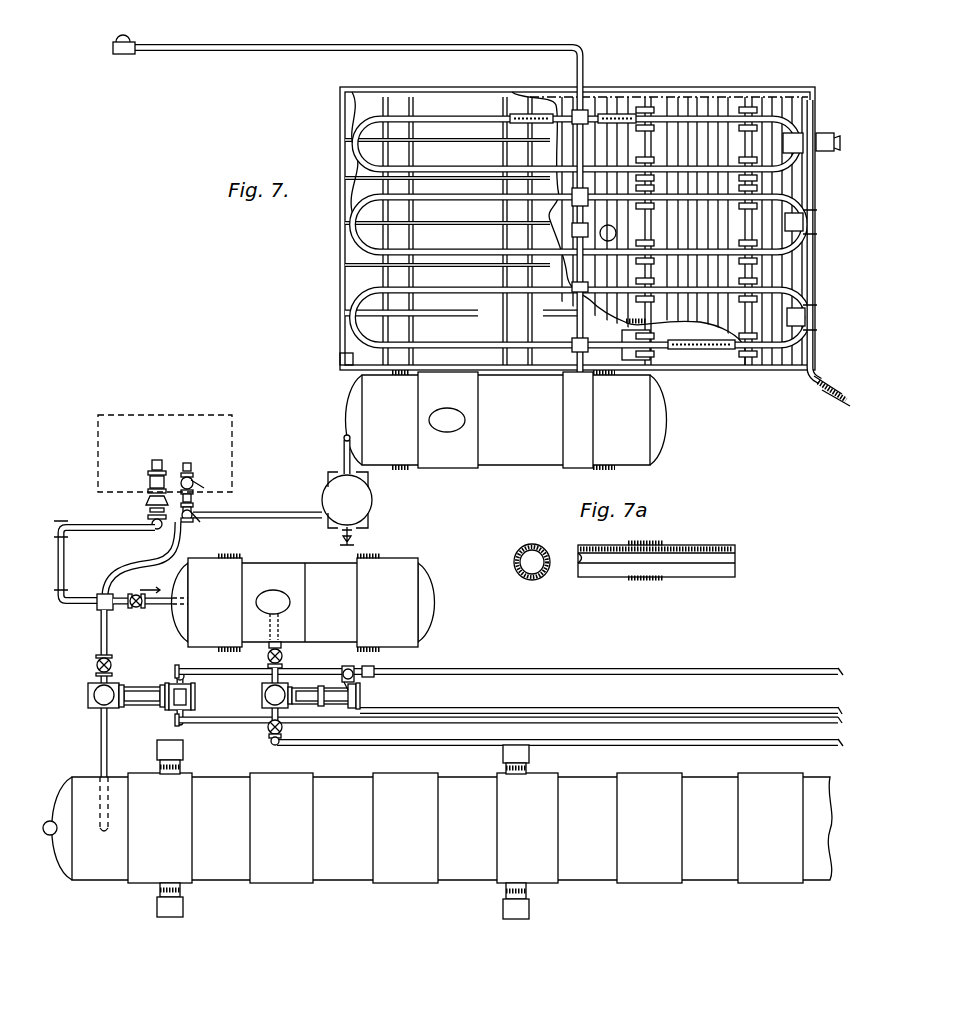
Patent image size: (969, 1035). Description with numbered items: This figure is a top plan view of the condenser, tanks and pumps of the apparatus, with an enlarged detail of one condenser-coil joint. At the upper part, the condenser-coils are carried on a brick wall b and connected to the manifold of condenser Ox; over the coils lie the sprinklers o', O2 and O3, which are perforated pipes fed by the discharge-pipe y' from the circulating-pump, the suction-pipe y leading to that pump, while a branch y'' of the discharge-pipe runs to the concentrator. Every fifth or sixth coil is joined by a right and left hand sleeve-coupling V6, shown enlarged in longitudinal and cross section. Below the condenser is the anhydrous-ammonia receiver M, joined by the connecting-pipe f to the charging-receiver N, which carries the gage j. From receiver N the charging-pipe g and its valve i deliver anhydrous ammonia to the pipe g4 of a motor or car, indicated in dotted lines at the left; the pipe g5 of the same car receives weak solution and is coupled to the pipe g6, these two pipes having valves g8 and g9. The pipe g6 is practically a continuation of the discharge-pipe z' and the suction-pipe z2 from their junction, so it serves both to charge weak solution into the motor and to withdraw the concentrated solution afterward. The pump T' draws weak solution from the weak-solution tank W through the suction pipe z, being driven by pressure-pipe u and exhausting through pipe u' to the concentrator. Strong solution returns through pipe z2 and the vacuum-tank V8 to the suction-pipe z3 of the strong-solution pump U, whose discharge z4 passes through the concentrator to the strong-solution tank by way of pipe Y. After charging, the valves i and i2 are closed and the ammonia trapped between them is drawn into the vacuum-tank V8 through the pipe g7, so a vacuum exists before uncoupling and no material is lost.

In FIG. 7, the brick wall b is at (334, 45).
In FIG. 7, the sprinkler O2 is at (530, 112).
In FIG. 7, the sprinkler O3 is at (622, 112).
In FIG. 7, the manifold of condenser Ox is at (705, 112).
In FIG. 7, the sprinkler o' is at (701, 368).
In FIG. 7, the discharge-pipe y' is at (602, 408).
In FIG. 7, the branch of discharge-pipe y'' is at (816, 257).
In FIG. 7, the anhydrous-ammonia receiver M is at (506, 420).
In FIG. 7, the charging-receiver N is at (347, 500).
In FIG. 7, the connecting-pipe f is at (342, 452).
In FIG. 7, the gage j is at (356, 538).
In FIG. 7, the charging-pipe g is at (244, 513).
In FIG. 7, the pipe g4 is at (190, 464).
In FIG. 7, the pipe g5 is at (157, 460).
In FIG. 7, the valve g8 is at (148, 477).
In FIG. 7, the valve g9 is at (150, 519).
In FIG. 7, the valve in charging-pipe i is at (185, 522).
In FIG. 7, the valve i2 is at (205, 475).
In FIG. 7, the pipe g6 is at (104, 561).
In FIG. 7, the pipe g7 is at (150, 563).
In FIG. 7, the discharge-pipe to motor z' is at (92, 624).
In FIG. 7, the suction-pipe z is at (99, 743).
In FIG. 7, the suction-pipe z2 is at (169, 609).
In FIG. 7, the suction-pipe z3 is at (287, 655).
In FIG. 7, the discharge-pipe z4 is at (560, 749).
In FIG. 7, the pump T' is at (157, 694).
In FIG. 7, the vacuum-tank V8 is at (303, 603).
In FIG. 7, the pressure-pipe u is at (506, 664).
In FIG. 7, the exhaust-pipe u' is at (508, 730).
In FIG. 7, the suction-pipe y is at (602, 662).
In FIG. 7, the strong-solution pump U is at (318, 702).
In FIG. 7, the pipe Y is at (350, 684).
In FIG. 7, the weak-solution tank W is at (437, 829).
In FIG. 7A, the sleeve-coupling V6 is at (624, 552).